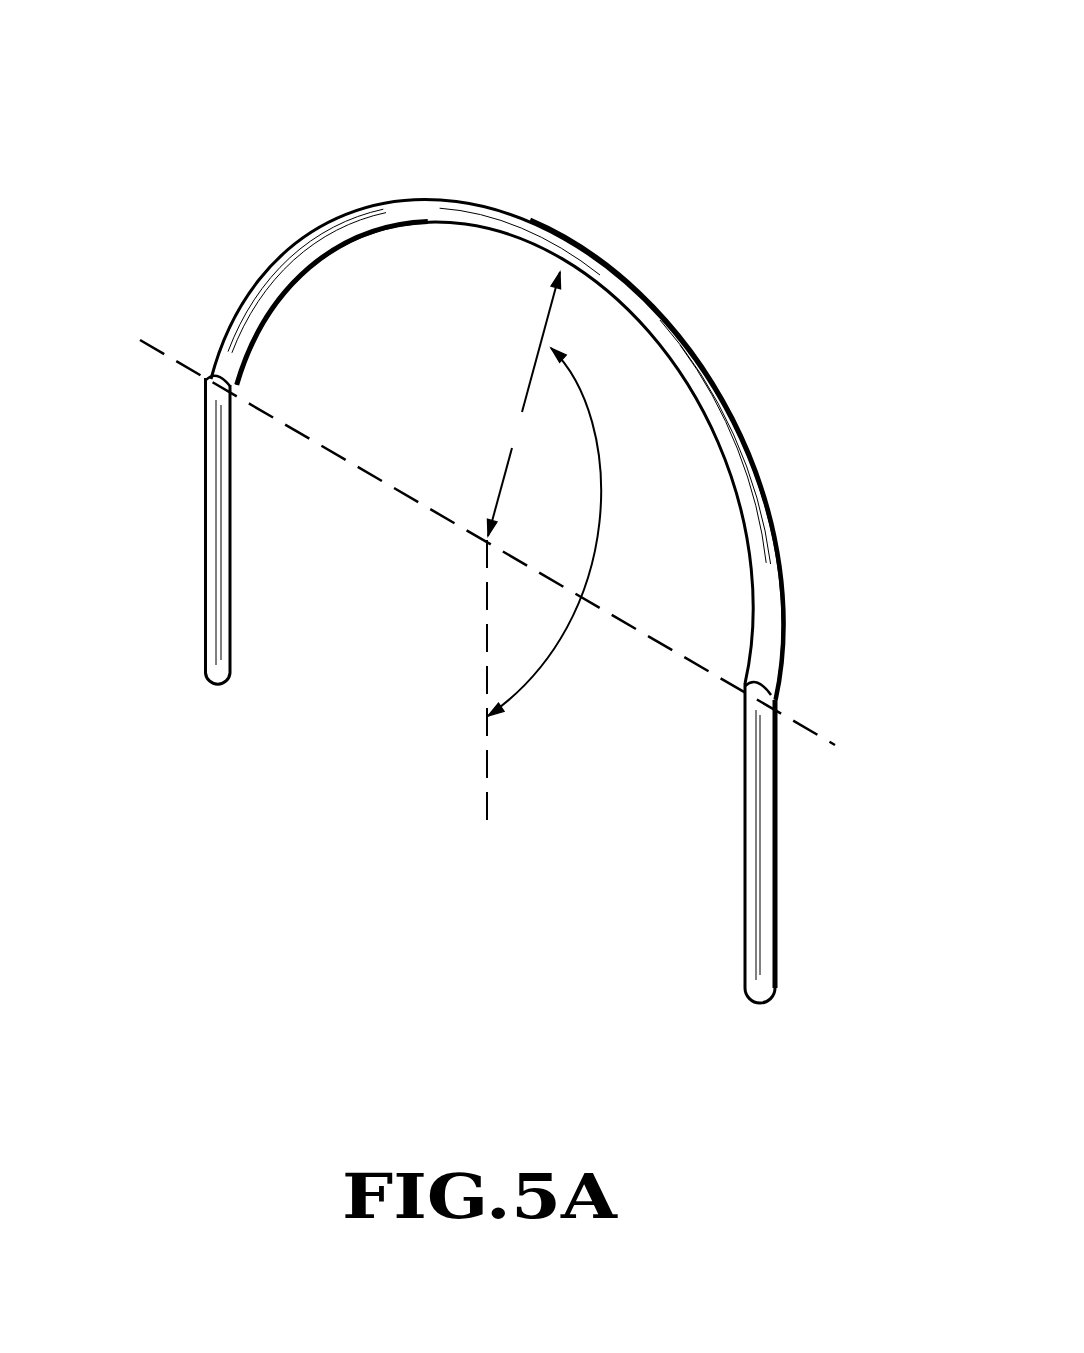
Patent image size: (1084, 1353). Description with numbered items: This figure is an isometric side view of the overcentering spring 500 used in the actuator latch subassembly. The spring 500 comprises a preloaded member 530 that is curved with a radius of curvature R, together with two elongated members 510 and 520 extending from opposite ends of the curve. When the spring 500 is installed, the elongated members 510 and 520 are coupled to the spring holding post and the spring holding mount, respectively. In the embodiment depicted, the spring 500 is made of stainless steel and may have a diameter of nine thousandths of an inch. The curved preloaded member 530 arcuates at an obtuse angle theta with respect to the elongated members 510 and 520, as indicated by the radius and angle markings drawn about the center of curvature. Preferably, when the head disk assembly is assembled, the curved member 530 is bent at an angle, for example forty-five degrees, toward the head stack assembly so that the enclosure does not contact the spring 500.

The spring 500 is at (633, 86).
The elongated member 510 is at (206, 537).
The elongated member 520 is at (776, 841).
The preloaded member 530 is at (296, 247).